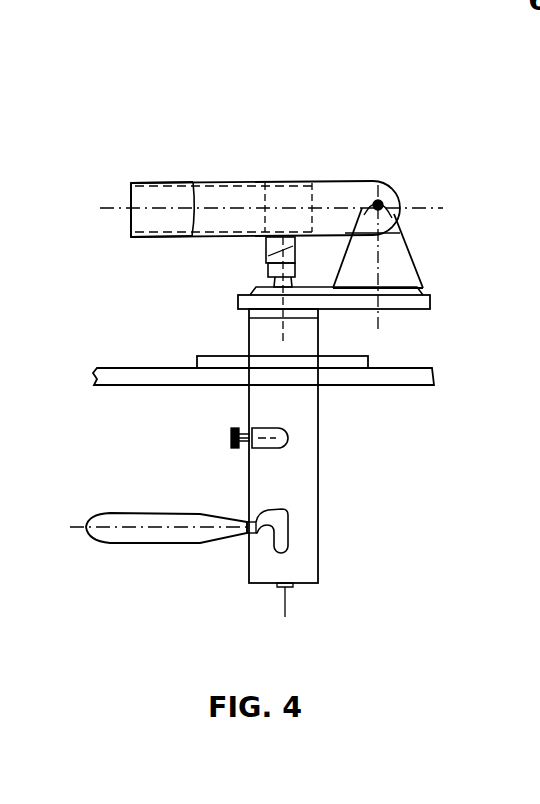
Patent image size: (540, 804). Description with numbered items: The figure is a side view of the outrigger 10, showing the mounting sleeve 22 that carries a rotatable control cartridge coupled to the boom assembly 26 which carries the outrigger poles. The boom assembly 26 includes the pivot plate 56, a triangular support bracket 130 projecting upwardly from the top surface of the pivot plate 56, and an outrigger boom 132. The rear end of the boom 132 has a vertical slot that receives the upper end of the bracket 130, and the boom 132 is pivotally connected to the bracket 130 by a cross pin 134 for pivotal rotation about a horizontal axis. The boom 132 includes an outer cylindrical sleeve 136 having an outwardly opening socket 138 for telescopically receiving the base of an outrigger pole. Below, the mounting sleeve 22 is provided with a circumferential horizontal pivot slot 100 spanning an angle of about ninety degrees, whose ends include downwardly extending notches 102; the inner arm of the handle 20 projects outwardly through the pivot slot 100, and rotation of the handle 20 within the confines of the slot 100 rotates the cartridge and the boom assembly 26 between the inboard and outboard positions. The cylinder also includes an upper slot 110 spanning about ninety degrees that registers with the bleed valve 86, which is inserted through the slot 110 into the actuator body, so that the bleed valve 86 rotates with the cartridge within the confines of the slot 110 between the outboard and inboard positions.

The table / apparatus 10 is at (217, 369).
The handle 20 is at (97, 545).
The mounting sleeve 22 is at (321, 576).
The boom assembly 26 is at (303, 180).
The pivot plate 56 is at (428, 306).
The bleed valve 86 is at (232, 436).
The pivot slot 100 is at (284, 512).
The notches 102 is at (287, 538).
The upper slot 110 is at (286, 431).
The triangular support bracket 130 is at (395, 250).
The outrigger boom 132 is at (253, 182).
The cross pin 134 is at (381, 200).
The outer cylindrical sleeve 136 is at (152, 183).
The socket 138 is at (148, 203).